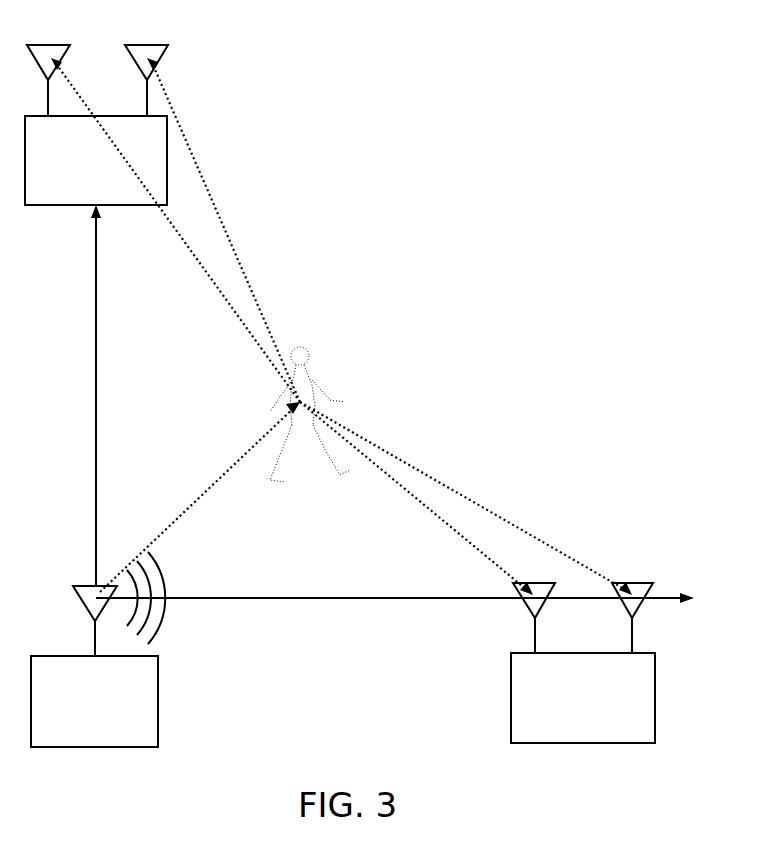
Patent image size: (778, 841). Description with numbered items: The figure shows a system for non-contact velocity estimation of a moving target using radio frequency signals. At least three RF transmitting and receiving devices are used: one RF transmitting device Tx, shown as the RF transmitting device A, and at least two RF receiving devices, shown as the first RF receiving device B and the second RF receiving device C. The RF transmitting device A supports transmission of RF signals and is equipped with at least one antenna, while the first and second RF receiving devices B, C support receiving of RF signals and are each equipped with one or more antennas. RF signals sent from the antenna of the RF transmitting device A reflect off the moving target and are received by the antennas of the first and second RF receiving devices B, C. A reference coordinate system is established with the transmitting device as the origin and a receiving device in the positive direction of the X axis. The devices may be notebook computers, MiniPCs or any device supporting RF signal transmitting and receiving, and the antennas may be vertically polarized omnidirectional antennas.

The RF transmitting device Tx A is at (92, 649).
The first RF receiving device B is at (113, 109).
The second RF receiving device C is at (602, 651).